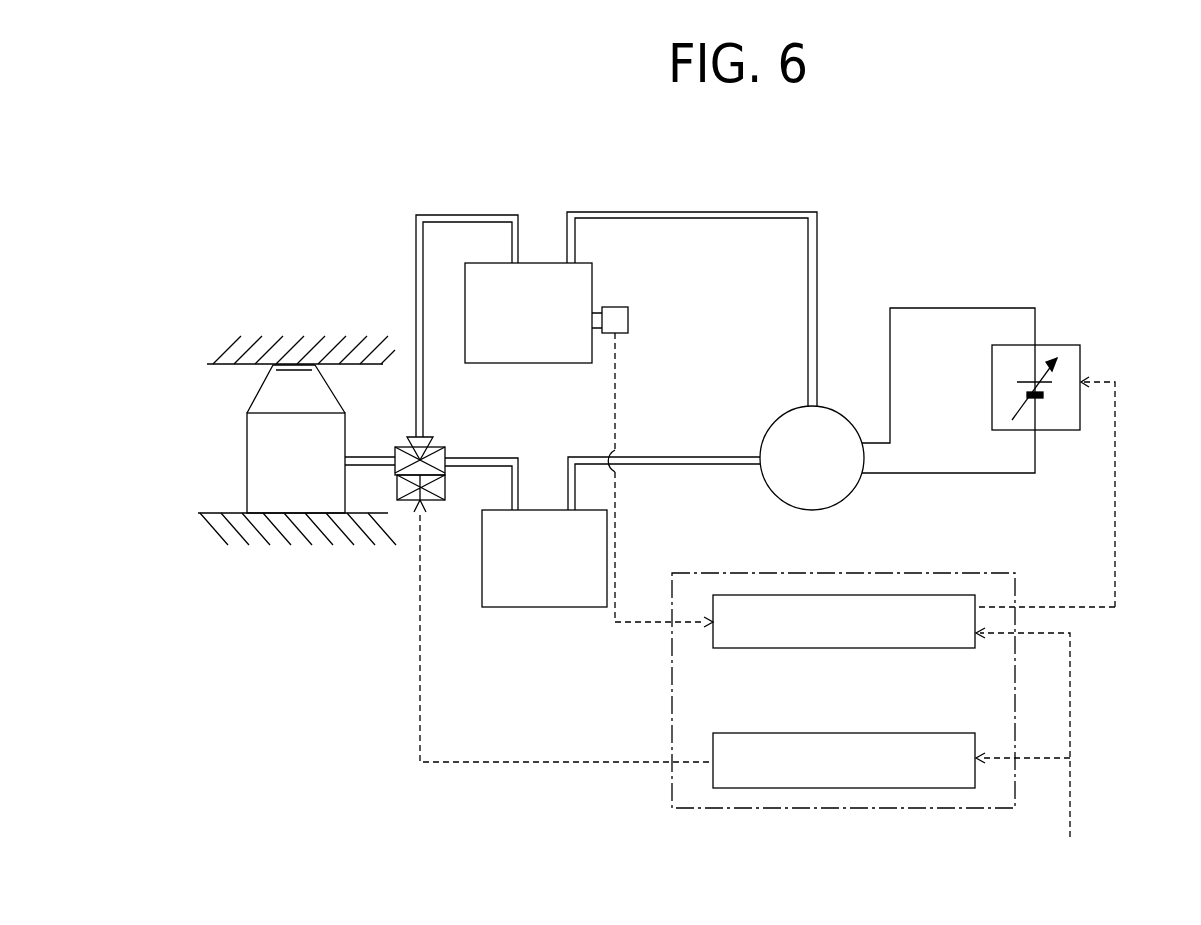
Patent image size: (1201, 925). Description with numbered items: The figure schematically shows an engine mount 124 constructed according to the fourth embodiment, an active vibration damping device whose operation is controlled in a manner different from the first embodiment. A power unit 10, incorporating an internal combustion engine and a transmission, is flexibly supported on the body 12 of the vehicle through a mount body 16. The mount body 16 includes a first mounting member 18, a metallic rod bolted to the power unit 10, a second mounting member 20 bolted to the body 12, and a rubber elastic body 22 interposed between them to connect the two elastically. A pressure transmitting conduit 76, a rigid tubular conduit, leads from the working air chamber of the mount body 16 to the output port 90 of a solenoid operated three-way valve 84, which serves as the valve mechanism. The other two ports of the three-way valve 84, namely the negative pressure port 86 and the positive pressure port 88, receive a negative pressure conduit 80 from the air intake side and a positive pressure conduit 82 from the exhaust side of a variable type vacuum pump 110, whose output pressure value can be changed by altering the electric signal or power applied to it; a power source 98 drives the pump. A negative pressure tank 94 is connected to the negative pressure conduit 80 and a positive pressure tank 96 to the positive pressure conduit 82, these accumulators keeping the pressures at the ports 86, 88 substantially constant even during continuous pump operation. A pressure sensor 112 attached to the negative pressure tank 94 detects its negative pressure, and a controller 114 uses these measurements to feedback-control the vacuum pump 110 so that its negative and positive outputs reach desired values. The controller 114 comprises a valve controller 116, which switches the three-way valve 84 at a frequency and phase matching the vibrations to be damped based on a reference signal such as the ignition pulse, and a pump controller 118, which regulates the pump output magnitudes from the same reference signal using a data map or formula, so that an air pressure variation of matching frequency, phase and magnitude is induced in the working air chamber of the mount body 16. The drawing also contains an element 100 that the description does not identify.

The power unit 10 is at (236, 350).
The body 12 is at (227, 527).
The mount body 16 is at (254, 386).
The first mounting member 18 is at (297, 366).
The second mounting member 20 is at (260, 467).
The rubber elastic body 22 is at (323, 397).
The pressure transmitting conduit 76 is at (363, 458).
The negative pressure conduit 80 is at (715, 212).
The positive pressure conduit 82 is at (682, 464).
The three-way valve 84 is at (531, 565).
The negative pressure port 86 is at (424, 432).
The positive pressure port 88 is at (447, 472).
The output port 90 is at (393, 472).
The negative pressure tank 94 is at (592, 277).
The positive pressure tank 96 is at (505, 607).
The power source 98 is at (986, 398).
The bypass pipe 100 is at (953, 290).
The variable type vacuum pump 110 is at (828, 488).
The pressure sensor 112 is at (620, 320).
The controller 114 is at (922, 680).
The valve controller 116 is at (840, 788).
The pump controller 118 is at (840, 648).
The engine mount 124 is at (632, 190).